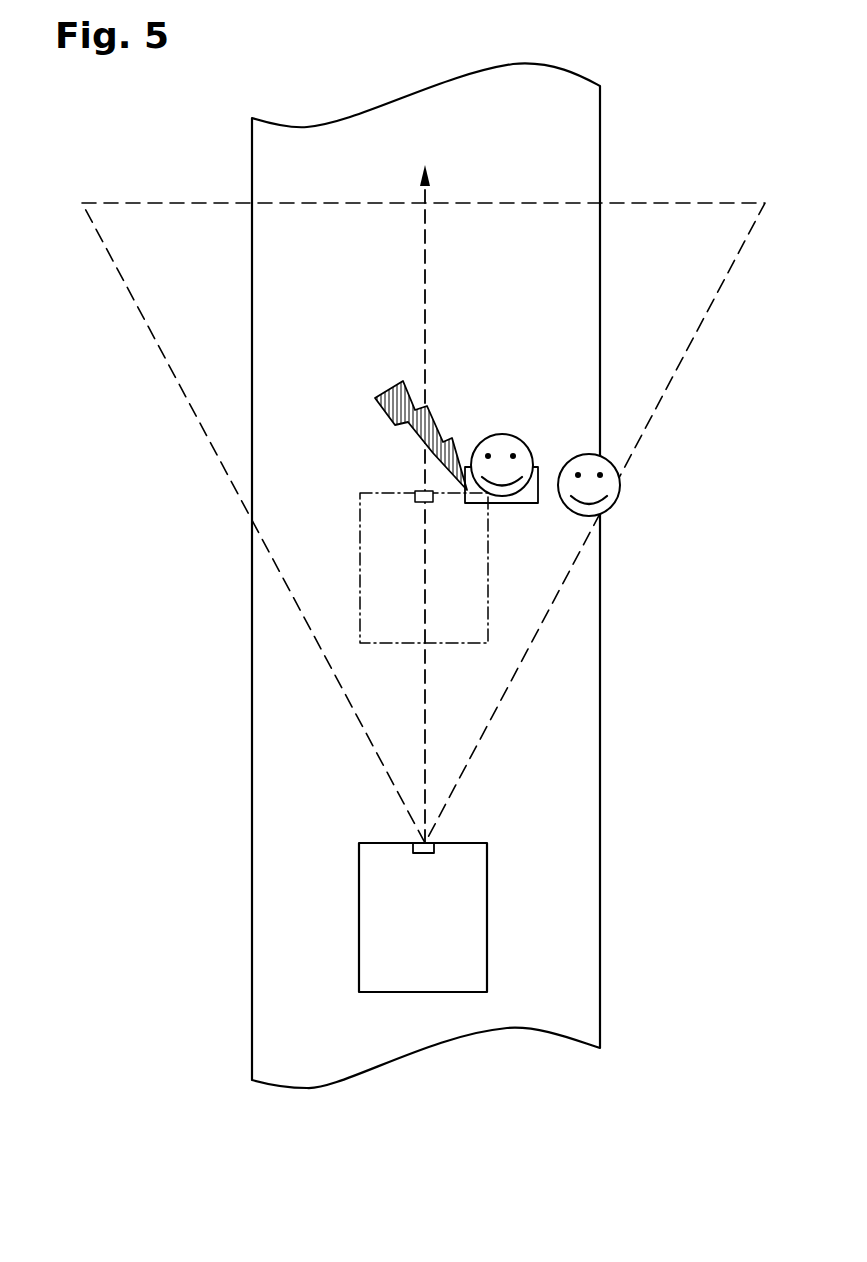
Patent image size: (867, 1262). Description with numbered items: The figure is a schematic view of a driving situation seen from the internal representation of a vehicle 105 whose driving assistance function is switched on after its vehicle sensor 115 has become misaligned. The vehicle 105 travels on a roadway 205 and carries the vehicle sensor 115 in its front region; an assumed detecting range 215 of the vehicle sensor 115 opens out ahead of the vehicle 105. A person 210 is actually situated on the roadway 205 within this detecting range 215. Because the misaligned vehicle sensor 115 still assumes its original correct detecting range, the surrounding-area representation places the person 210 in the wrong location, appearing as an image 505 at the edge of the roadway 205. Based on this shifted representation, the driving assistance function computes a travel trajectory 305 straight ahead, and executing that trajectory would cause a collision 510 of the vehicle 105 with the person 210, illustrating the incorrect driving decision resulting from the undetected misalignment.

The vehicle 105 is at (445, 993).
The vehicle sensor 115 is at (422, 843).
The roadway 205 is at (548, 823).
The person 210 is at (500, 434).
The detecting range 215 is at (222, 303).
The travel trajectory 305 is at (425, 292).
The image 505 is at (621, 487).
The collision 510 is at (378, 402).